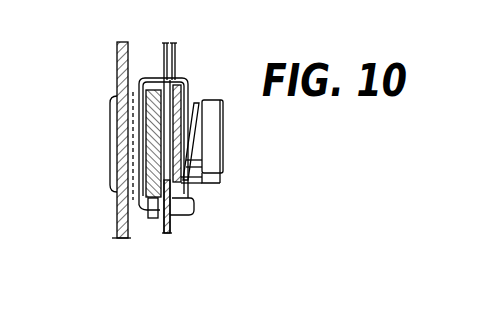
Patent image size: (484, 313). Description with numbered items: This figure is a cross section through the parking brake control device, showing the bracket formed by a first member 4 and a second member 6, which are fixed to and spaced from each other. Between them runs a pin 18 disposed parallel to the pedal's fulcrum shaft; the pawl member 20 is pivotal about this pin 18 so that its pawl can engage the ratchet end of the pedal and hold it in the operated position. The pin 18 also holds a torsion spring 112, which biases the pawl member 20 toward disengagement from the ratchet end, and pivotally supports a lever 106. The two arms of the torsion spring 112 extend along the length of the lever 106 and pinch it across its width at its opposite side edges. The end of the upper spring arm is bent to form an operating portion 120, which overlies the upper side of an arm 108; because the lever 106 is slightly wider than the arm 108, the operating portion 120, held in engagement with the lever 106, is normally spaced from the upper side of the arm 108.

The first member 4 is at (117, 223).
The second member 6 is at (172, 220).
The pin 18 is at (205, 142).
The pawl member 20 is at (152, 224).
The lever 106 is at (197, 197).
The arm 108 is at (145, 137).
The torsion spring 112 is at (203, 83).
The operating portion 120 is at (155, 76).